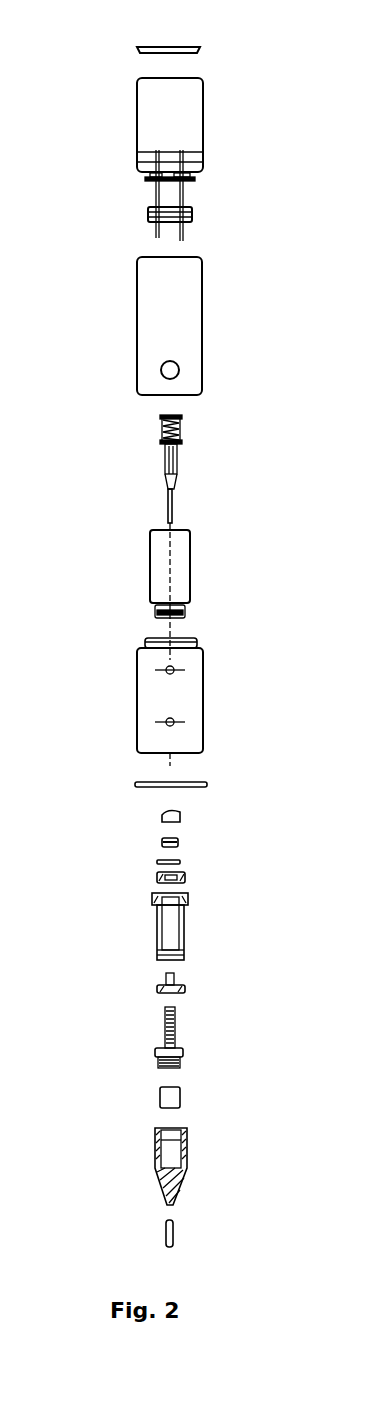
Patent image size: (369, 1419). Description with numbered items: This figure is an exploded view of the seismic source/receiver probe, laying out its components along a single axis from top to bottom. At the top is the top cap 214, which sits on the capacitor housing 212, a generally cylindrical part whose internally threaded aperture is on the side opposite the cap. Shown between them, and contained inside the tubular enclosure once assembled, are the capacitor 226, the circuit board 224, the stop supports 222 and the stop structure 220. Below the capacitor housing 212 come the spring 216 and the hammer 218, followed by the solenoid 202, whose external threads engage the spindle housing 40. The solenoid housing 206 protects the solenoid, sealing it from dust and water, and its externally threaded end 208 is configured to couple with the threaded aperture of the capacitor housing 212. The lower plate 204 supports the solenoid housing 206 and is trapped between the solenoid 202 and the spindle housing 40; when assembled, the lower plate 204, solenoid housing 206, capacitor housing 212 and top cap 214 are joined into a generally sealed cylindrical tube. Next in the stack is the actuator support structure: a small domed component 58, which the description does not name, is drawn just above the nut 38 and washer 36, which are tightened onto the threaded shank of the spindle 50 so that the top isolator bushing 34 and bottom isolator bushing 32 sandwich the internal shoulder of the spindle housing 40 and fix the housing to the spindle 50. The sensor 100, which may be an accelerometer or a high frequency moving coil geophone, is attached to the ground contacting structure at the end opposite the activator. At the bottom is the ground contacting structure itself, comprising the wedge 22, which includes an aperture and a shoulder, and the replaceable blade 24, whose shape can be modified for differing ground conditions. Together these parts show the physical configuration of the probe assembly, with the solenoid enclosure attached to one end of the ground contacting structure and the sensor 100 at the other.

The top cap 214 is at (200, 49).
The capacitor 226 is at (203, 128).
The circuit board 224 is at (195, 179).
The stop supports 222 is at (155, 192).
The stop structure 220 is at (192, 218).
The capacitor housing 212 is at (187, 314).
The spring 216 is at (160, 430).
The hammer 218 is at (177, 457).
The solenoid 202 is at (192, 563).
The externally threaded end 208 is at (200, 641).
The solenoid housing 206 is at (205, 695).
The lower plate 204 is at (207, 783).
The cap 58 is at (180, 812).
The nut 38 is at (178, 842).
The washer 36 is at (180, 862).
The top isolator bushing 34 is at (157, 877).
The spindle housing 40 is at (186, 938).
The bottom isolator bushing 32 is at (157, 988).
The spindle 50 is at (183, 1052).
The sensor 100 is at (180, 1095).
The wedge 22 is at (187, 1155).
The replaceable blade 24 is at (173, 1230).